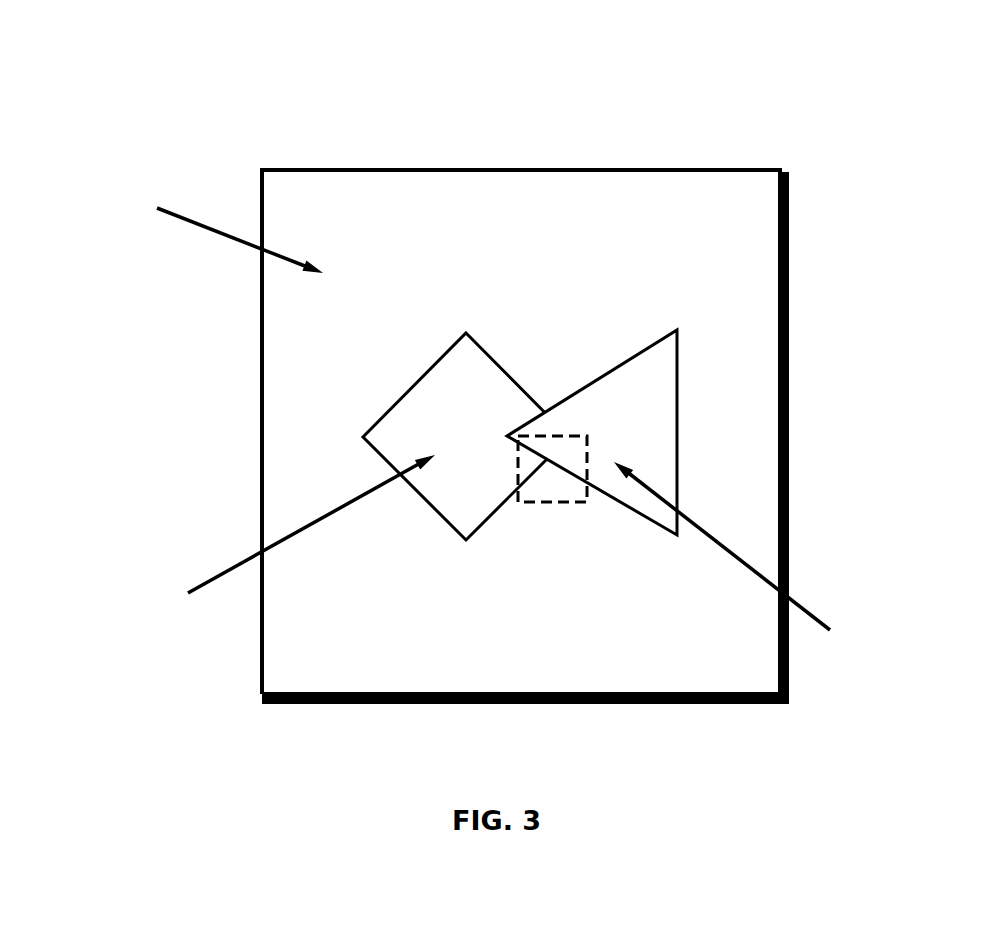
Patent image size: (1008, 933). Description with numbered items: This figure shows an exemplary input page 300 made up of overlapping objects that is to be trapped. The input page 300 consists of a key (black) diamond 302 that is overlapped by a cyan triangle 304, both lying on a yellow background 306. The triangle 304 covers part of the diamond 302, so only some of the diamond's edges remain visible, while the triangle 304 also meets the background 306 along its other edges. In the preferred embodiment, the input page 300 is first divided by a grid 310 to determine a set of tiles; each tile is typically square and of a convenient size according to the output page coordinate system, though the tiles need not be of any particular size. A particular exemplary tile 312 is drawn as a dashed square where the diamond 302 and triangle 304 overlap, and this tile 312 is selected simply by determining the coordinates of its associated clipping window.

The input page 300 is at (312, 74).
The key diamond 302 is at (485, 421).
The cyan triangle 304 is at (650, 422).
The yellow background 306 is at (738, 669).
The grid 310 is at (500, 290).
The exemplary tile 312 is at (563, 503).